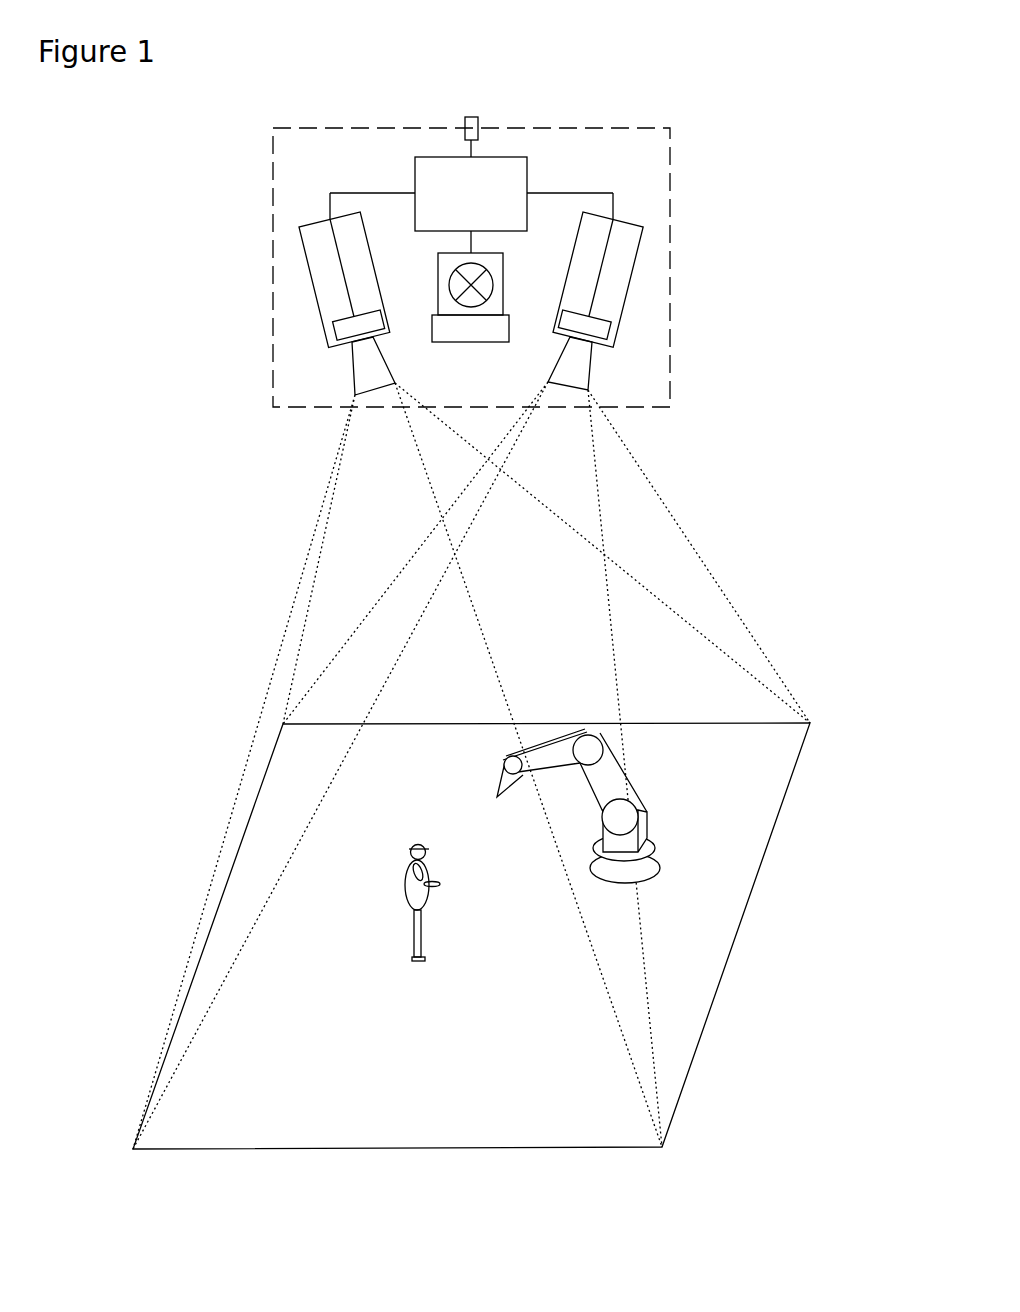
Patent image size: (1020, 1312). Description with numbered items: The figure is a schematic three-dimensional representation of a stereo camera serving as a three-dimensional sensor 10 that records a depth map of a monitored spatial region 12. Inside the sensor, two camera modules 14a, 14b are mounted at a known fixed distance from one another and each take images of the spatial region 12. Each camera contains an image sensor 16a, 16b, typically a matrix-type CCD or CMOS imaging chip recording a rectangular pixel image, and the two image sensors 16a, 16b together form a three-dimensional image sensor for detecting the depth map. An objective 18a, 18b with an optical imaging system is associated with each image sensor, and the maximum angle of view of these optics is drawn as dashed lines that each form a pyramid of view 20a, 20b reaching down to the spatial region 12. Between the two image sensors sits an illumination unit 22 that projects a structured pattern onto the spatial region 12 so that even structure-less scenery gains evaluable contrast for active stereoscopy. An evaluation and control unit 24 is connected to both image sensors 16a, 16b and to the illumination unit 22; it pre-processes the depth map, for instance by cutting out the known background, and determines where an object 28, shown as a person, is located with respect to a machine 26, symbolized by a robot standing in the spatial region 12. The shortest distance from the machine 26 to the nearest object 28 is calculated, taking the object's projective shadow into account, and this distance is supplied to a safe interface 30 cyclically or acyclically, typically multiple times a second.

The 3D sensor 10 is at (670, 143).
The spatial region 12 is at (777, 575).
The first camera module 14a is at (317, 287).
The second camera module 14b is at (641, 259).
The first image sensor 16a is at (333, 337).
The second image sensor 16b is at (612, 326).
The first objective 18a is at (357, 373).
The second objective 18b is at (592, 396).
The first pyramid of view 20a is at (293, 582).
The second pyramid of view 20b is at (695, 560).
The illumination unit 22 is at (537, 301).
The evaluation and control unit 24 is at (427, 167).
The machine 26 is at (647, 868).
The object 28 is at (411, 947).
The safe interface 30 is at (478, 117).